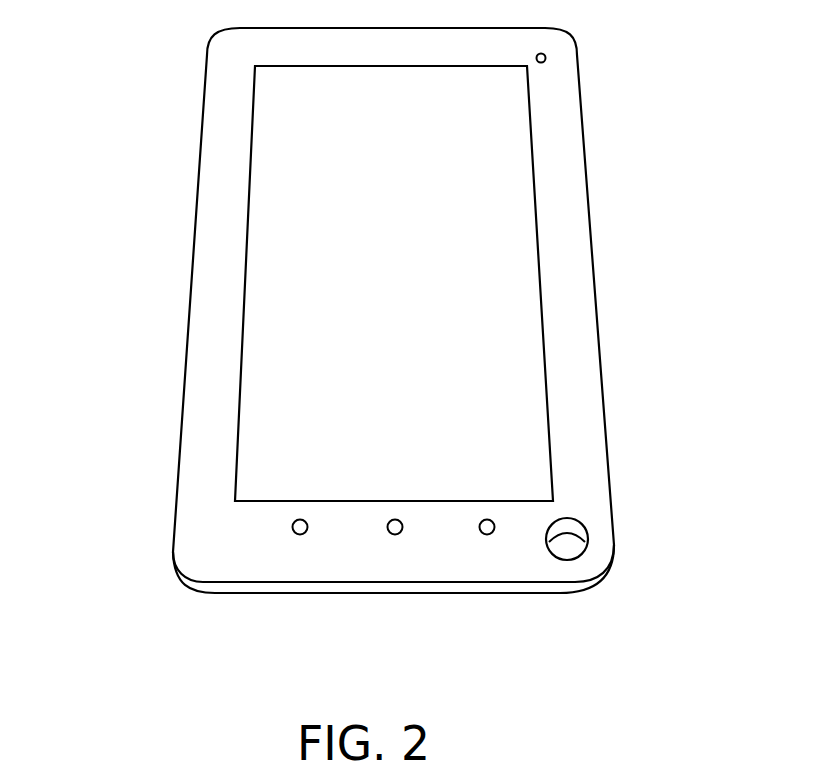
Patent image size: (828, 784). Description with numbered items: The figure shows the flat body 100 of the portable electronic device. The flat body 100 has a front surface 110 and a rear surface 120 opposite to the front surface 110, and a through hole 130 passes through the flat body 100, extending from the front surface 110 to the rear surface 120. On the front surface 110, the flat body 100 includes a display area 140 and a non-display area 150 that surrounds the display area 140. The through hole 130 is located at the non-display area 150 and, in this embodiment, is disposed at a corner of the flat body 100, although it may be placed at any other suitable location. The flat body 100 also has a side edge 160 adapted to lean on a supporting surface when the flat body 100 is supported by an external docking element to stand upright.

The portable electronic device 100 is at (663, 680).
The display module 110 is at (312, 240).
The housing 120 is at (602, 183).
The home key 130 is at (565, 542).
The touch panel 140 is at (288, 372).
The front frame 150 is at (198, 462).
The side surface 160 is at (188, 310).